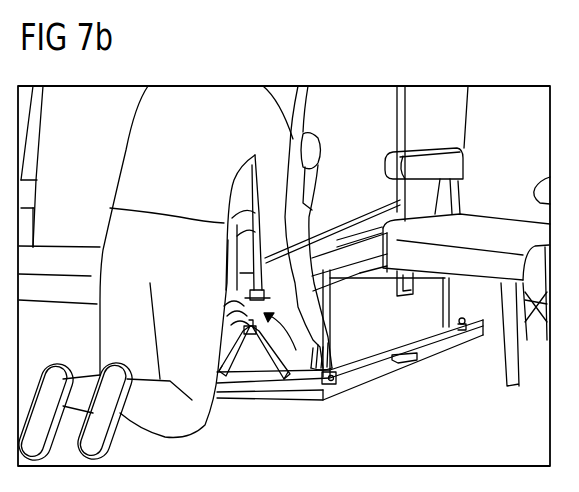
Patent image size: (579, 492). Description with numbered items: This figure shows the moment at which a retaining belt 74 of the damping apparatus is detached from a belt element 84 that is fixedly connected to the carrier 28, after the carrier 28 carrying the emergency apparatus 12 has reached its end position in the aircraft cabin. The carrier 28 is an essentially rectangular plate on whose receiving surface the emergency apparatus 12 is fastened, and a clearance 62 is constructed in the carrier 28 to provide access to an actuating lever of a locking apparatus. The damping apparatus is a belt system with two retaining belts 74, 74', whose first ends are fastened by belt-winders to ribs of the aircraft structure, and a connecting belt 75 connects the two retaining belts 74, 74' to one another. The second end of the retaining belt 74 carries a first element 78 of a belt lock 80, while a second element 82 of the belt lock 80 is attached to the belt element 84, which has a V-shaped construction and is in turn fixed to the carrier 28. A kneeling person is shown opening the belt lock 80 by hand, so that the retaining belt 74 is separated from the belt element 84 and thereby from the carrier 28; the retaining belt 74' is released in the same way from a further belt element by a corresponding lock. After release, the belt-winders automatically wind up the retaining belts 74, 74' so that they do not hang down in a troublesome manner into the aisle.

The emergency apparatus 12 is at (345, 260).
The carrier 28 is at (342, 380).
The clearance 62 is at (407, 358).
The retaining belt 74 is at (226, 222).
The retaining belt 74' is at (370, 153).
The connecting belt 75 is at (372, 210).
The first element of belt lock 78 is at (253, 291).
The belt lock 80 is at (296, 352).
The second element of belt lock 82 is at (245, 332).
The belt element 84 is at (272, 363).